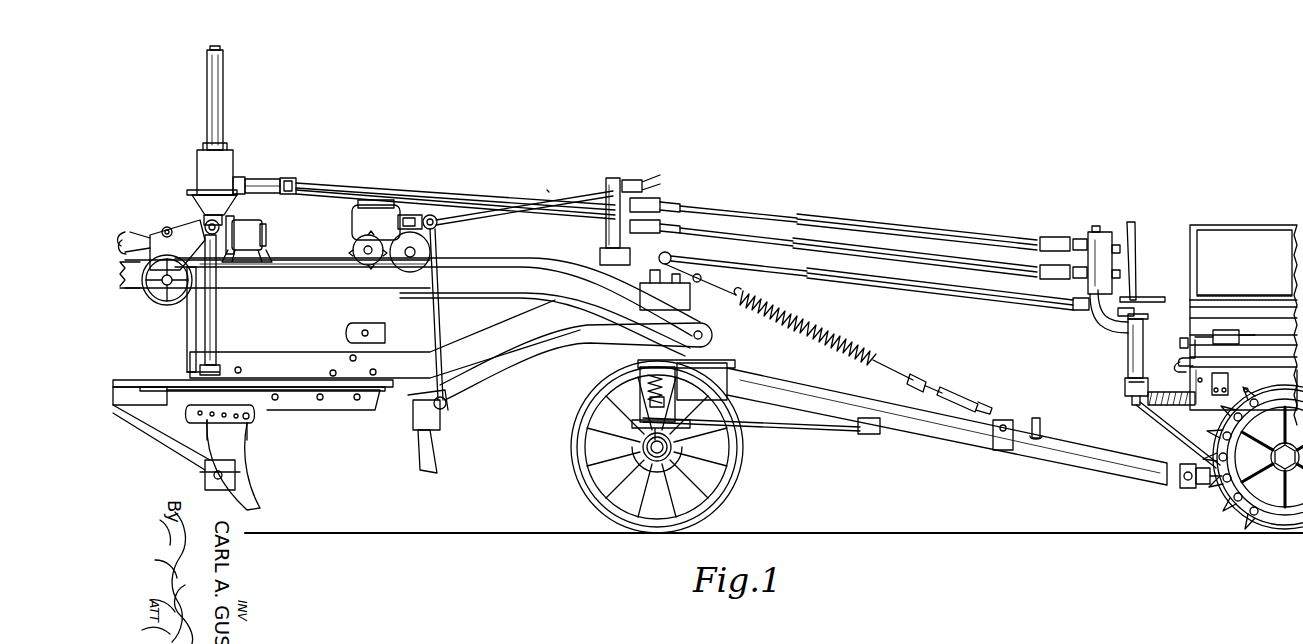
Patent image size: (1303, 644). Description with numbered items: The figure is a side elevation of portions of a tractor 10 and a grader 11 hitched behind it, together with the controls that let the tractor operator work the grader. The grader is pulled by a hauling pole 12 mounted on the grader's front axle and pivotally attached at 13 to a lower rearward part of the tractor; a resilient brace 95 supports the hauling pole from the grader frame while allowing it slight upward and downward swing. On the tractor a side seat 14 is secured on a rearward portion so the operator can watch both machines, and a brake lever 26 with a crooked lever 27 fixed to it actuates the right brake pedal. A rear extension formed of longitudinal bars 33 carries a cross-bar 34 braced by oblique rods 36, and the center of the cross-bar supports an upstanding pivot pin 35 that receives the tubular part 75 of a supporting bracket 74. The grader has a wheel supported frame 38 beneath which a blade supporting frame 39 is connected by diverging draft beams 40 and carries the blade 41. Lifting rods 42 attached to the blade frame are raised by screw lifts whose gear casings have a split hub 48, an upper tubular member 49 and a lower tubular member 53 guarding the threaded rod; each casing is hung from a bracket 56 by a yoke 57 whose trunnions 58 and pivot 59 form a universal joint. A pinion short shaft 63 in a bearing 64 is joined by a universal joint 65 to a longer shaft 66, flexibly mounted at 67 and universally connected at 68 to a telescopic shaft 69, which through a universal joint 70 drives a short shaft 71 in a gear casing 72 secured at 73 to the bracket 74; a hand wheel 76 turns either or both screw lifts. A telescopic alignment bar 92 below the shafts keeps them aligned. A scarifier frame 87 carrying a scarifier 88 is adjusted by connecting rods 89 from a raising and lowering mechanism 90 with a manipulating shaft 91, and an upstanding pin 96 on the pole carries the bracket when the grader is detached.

The tractor 10 is at (1265, 214).
The grader 11 is at (553, 181).
The hauling pole 12 is at (955, 442).
The pivotal attachment 13 is at (1185, 489).
The side seat 14 is at (1215, 240).
The brake lever 26 is at (1225, 338).
The crooked lever 27 is at (1178, 366).
The longitudinal bars 33 is at (1170, 396).
The cross-bar 34 is at (1125, 388).
The upstanding pivot pin 35 is at (1148, 318).
The oblique rods 36 is at (1166, 431).
The wheel supported frame 38 is at (536, 258).
The blade supporting frame 39 is at (288, 377).
The draft beams 40 is at (275, 358).
The blade 41 is at (243, 487).
The lifting rods 42 is at (214, 338).
The split hub 48 is at (197, 176).
The tubular member 49 is at (222, 96).
The tubular member 53 is at (222, 290).
The bracket 56 is at (272, 252).
The yoke 57 is at (212, 220).
The trunnions 58 is at (204, 221).
The pivot 59 is at (262, 228).
The short shaft 63 is at (256, 185).
The bearing 64 is at (247, 176).
The universal joint 65 is at (288, 179).
The longer shaft 66 is at (473, 204).
The flexible mounting 67 is at (607, 226).
The universal connection 68 is at (654, 184).
The telescopic shafts 69 is at (913, 229).
The universal joint 70 is at (1058, 238).
The short shafts 71 is at (1080, 239).
The gear casing 72 is at (1106, 232).
The securing means 73 is at (1132, 312).
The supporting bracket 74 is at (1099, 342).
The tubular part 75 is at (1128, 357).
The hand wheel 76 is at (1137, 256).
The scarifier frame 87 is at (478, 376).
The scarifier 88 is at (437, 460).
The connecting rods 89 is at (432, 305).
The raising and lowering mechanism 90 is at (414, 205).
The manipulating shaft 91 is at (482, 214).
The telescopic alignment bar 92 is at (870, 285).
The resilient brace 95 is at (893, 373).
The upstanding pin 96 is at (1042, 424).